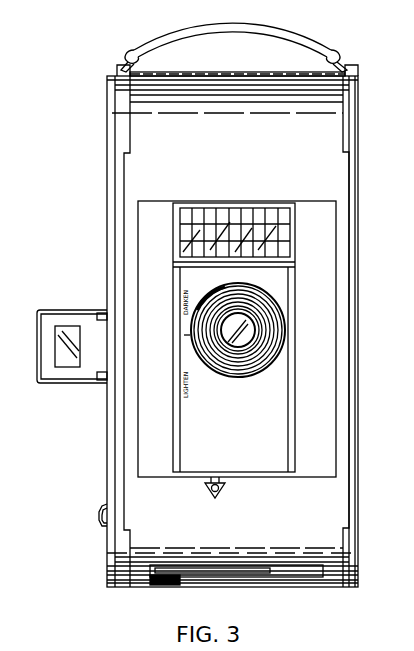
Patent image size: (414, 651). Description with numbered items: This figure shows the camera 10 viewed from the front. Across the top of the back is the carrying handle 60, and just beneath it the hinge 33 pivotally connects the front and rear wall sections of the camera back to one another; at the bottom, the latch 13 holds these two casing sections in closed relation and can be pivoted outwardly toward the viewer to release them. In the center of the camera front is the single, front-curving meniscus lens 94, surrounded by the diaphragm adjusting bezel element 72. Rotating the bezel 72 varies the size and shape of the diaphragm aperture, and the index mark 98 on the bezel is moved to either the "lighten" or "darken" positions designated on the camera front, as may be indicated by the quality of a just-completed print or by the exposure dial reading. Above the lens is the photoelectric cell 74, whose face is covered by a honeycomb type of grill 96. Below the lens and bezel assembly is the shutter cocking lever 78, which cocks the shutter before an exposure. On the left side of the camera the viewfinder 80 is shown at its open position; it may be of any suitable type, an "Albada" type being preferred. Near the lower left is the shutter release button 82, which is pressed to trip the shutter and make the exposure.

The camera 10 is at (364, 178).
The latch 13 is at (165, 587).
The hinge 33 is at (233, 72).
The handle 60 is at (316, 29).
The diaphragm adjusting bezel element 72 is at (268, 371).
The photoelectric cell 74 is at (173, 213).
The shutter cocking lever 78 is at (227, 489).
The viewfinder 80 is at (37, 327).
The shutter release button 82 is at (100, 524).
The meniscus lens 94 is at (243, 321).
The honeycomb grill 96 is at (263, 212).
The index mark 98 is at (208, 368).